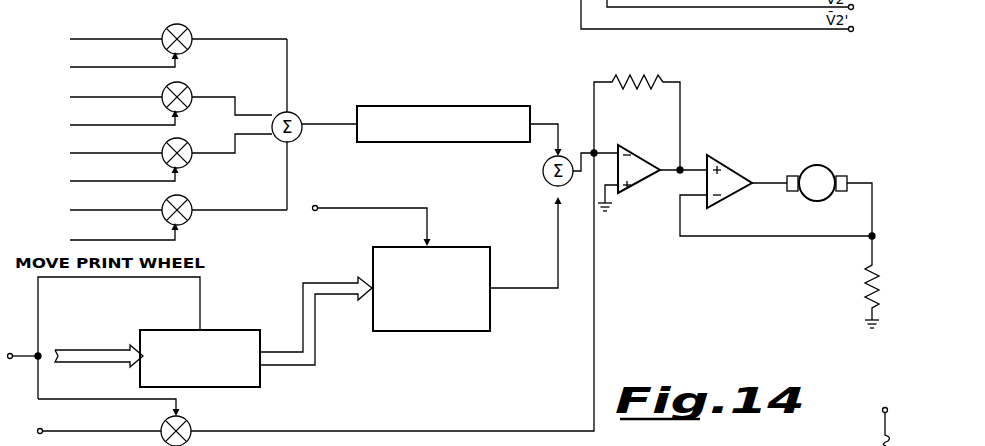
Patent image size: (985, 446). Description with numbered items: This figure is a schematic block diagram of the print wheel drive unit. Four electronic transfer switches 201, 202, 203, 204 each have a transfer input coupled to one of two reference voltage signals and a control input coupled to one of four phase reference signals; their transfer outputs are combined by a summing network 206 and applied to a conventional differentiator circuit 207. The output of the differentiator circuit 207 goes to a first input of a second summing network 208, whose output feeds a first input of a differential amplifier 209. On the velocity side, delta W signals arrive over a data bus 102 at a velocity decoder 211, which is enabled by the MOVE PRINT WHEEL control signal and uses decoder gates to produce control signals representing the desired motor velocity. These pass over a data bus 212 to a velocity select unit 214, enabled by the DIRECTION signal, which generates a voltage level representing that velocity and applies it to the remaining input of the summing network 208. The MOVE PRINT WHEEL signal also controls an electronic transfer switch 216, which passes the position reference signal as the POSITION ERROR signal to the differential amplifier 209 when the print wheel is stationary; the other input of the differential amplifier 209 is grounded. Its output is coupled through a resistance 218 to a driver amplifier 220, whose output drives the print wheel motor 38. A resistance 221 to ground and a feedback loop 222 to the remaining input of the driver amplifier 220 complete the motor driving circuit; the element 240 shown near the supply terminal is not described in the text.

The print wheel motor 38 is at (820, 170).
The data bus 102 is at (116, 350).
The electronic transfer switch 201 is at (180, 28).
The electronic transfer switch 202 is at (181, 86).
The electronic transfer switch 203 is at (181, 142).
The electronic transfer switch 204 is at (186, 199).
The summing network 206 is at (293, 113).
The differentiator circuit 207 is at (420, 105).
The summing network 208 is at (543, 176).
The differential amplifier 209 is at (650, 160).
The velocity decoder 211 is at (233, 330).
The data bus 212 is at (340, 282).
The velocity select unit 214 is at (454, 251).
The electronic transfer switch 216 is at (188, 422).
The resistance 218 is at (648, 77).
The driver amplifier 220 is at (733, 168).
The resistance 221 is at (866, 292).
The feedback loop 222 is at (742, 240).
The coil 240 is at (860, 413).